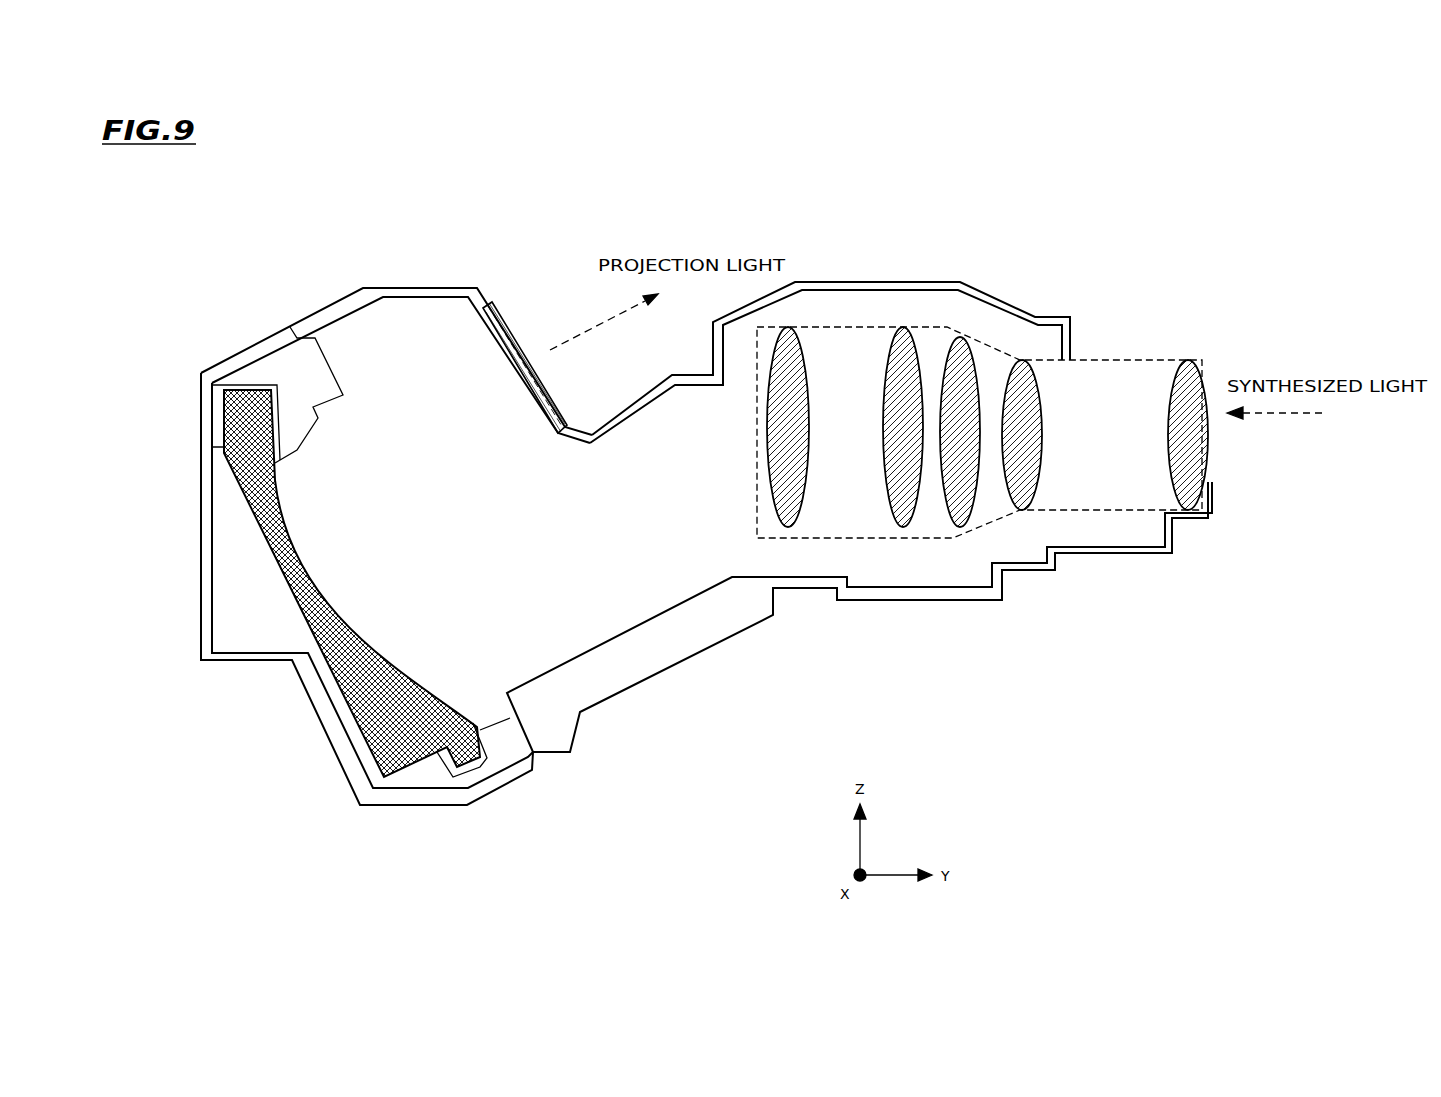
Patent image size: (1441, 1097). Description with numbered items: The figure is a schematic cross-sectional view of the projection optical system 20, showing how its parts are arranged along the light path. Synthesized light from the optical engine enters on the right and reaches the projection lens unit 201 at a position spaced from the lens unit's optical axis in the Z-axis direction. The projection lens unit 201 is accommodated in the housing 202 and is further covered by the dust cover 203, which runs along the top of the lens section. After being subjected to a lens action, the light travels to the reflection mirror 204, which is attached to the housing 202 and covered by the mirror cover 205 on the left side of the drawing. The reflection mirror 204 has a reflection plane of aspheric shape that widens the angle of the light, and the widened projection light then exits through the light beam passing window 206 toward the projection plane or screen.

The projection optical unit 20 is at (659, 492).
The projection lens unit 201 is at (948, 325).
The housing 202 is at (620, 675).
The dust cover 203 is at (837, 285).
The reflection mirror 204 is at (350, 715).
The mirror cover 205 is at (228, 660).
The light beam passing window 206 is at (500, 307).